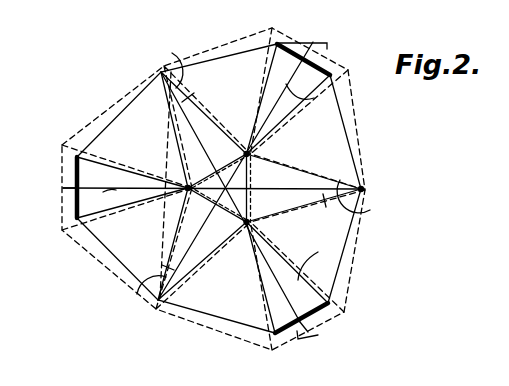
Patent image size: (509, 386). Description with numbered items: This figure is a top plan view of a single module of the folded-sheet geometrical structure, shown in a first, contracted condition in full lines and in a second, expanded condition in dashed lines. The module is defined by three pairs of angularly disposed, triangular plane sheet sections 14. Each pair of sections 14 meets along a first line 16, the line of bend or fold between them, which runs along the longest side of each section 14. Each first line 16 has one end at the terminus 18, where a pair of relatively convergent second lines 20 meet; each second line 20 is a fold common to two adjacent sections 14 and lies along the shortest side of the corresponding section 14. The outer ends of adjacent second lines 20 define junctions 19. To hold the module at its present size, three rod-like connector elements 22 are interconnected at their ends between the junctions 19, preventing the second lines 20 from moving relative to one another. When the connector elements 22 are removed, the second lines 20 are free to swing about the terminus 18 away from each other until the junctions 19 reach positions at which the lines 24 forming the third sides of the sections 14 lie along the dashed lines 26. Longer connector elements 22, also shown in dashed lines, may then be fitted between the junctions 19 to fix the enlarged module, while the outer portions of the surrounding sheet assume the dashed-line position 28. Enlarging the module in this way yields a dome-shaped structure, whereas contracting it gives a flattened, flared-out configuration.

The plane sheet sections 14 is at (187, 98).
The first line 16 is at (174, 56).
The terminus 18 is at (233, 188).
The junctions 19 is at (251, 155).
The second lines 20 is at (318, 44).
The rod-like connector elements 22 is at (247, 150).
The lines defining the third sides of sections 24 is at (167, 114).
The dashed lines 26 is at (168, 135).
The dashed-line position of sheet outer portions 28 is at (362, 245).